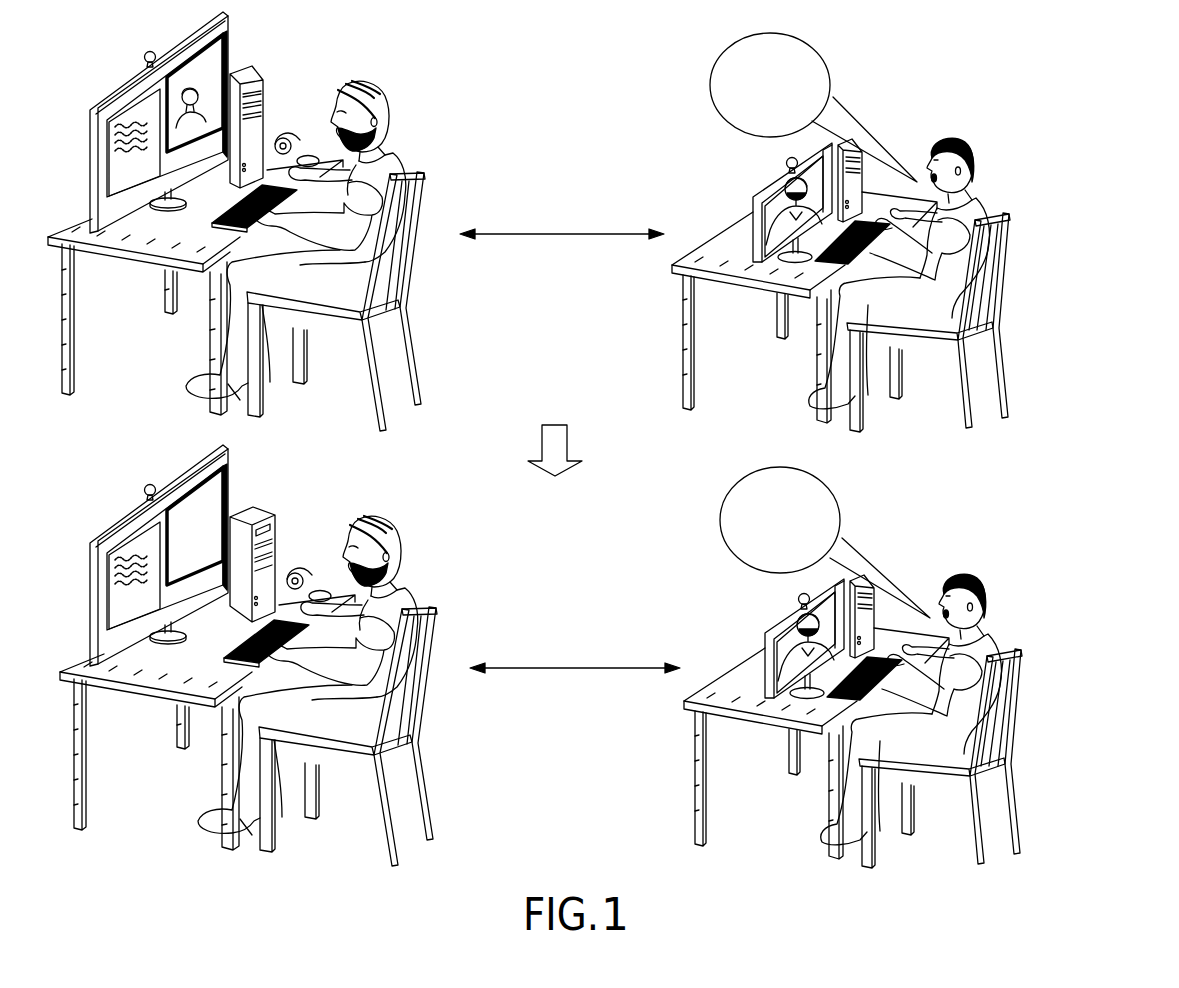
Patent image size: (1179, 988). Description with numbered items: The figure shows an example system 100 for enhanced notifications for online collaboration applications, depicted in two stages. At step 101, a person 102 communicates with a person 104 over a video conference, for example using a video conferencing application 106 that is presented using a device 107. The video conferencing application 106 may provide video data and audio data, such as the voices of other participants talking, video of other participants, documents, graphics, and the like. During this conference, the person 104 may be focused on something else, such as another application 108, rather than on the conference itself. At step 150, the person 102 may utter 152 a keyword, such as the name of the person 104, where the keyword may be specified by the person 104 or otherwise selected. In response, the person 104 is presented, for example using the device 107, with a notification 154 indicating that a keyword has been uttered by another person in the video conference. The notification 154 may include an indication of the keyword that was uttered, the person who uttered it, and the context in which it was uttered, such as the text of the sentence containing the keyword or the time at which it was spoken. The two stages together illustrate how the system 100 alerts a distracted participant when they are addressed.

The system 100 is at (611, 440).
The step 101 is at (1043, 148).
The person 102 is at (940, 142).
The person 104 is at (358, 82).
The video conferencing application 106 is at (225, 46).
The device 107 is at (177, 339).
The application 108 is at (107, 138).
The step 150 is at (590, 667).
The utterance 152 is at (841, 512).
The notification 154 is at (238, 526).